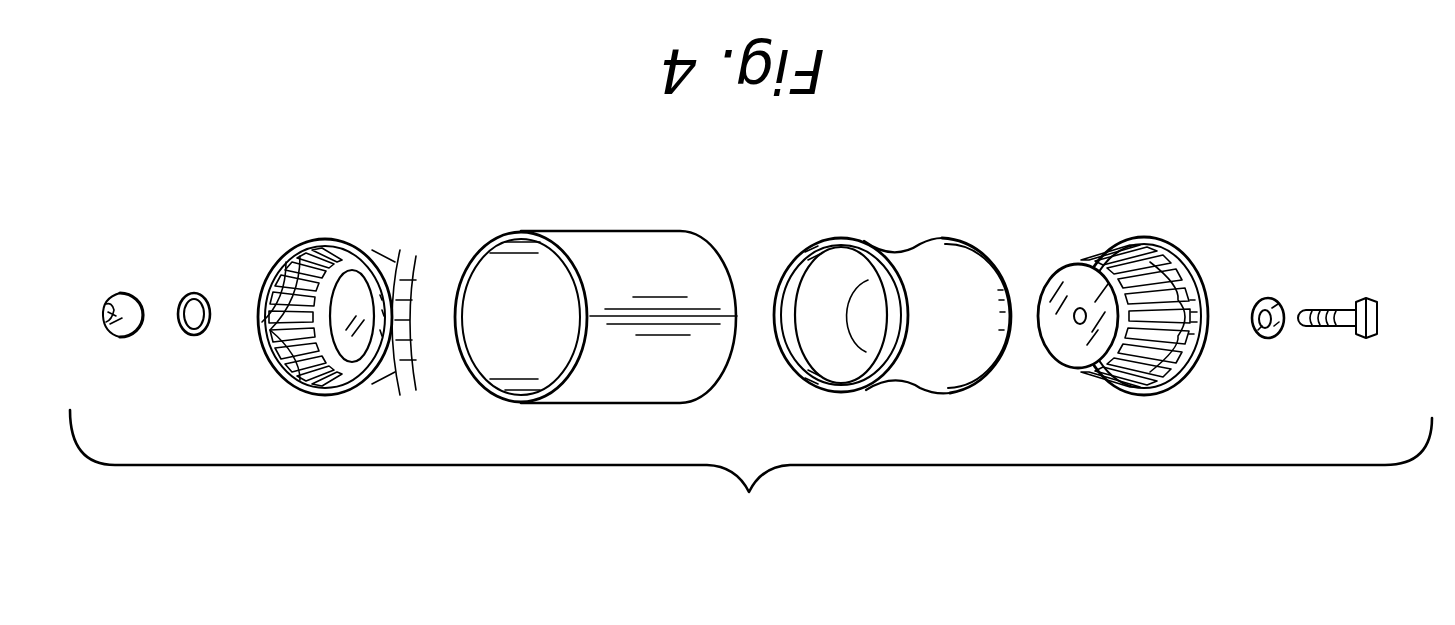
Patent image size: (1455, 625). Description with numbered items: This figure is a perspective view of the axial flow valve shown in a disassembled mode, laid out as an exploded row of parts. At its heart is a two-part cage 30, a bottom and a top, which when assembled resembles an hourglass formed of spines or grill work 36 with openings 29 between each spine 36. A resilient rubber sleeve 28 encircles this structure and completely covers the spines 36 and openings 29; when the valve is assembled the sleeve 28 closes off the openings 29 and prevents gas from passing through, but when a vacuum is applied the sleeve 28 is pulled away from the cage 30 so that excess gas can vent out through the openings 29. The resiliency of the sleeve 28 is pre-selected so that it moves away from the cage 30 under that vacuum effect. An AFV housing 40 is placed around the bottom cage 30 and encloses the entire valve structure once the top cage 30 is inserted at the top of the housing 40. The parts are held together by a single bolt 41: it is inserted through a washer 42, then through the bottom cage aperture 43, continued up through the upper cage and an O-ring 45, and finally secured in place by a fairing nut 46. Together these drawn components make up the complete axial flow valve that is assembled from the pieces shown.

The sleeve 28 is at (915, 370).
The openings 29 is at (392, 288).
The cage 30 is at (345, 392).
The spines 36 is at (300, 300).
The AFV housing 40 is at (637, 250).
The bolt 41 is at (1380, 336).
The washer 42 is at (1265, 340).
The bottom cage aperture 43 is at (1080, 328).
The O-ring 45 is at (186, 338).
The fairing nut 46 is at (114, 328).